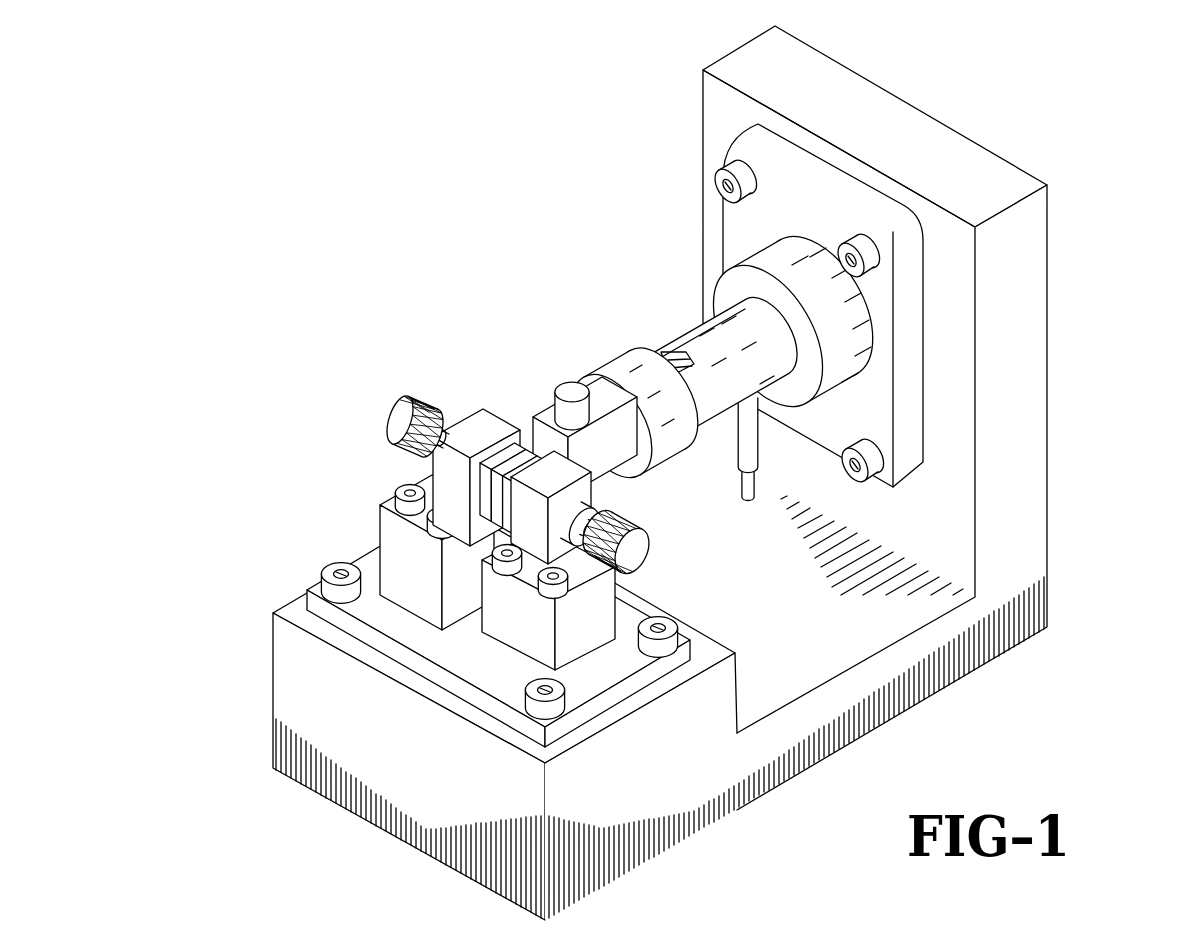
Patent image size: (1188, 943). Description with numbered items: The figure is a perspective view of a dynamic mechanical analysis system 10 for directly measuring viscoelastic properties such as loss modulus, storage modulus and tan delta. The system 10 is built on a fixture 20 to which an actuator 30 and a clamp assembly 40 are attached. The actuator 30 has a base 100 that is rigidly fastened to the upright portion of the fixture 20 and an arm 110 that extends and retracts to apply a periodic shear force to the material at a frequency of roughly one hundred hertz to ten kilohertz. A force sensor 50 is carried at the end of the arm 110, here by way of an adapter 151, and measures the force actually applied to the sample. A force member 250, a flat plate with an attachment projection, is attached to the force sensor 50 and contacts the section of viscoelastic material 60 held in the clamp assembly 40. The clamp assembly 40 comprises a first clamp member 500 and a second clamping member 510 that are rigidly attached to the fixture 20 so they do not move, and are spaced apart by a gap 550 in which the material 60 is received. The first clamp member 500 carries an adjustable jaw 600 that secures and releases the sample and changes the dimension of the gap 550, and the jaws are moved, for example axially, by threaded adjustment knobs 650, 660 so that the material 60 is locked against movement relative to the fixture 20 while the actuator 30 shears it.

The dynamic mechanical analysis system 10 is at (652, 473).
The fixture 20 is at (901, 130).
The actuator 30 is at (667, 335).
The clamp assembly 40 is at (372, 472).
The force sensor 50 is at (610, 463).
The viscoelastic material 60 is at (513, 462).
The base 100 is at (907, 302).
The arm 110 is at (697, 397).
The adapter 151 is at (622, 387).
The force member 250 is at (540, 452).
The first clamp member 500 is at (392, 522).
The second clamping member 510 is at (523, 593).
The gap 550 is at (488, 507).
The jaw 600 is at (493, 462).
The threaded adjustment knob 650 is at (397, 412).
The threaded adjustment knob 660 is at (636, 556).